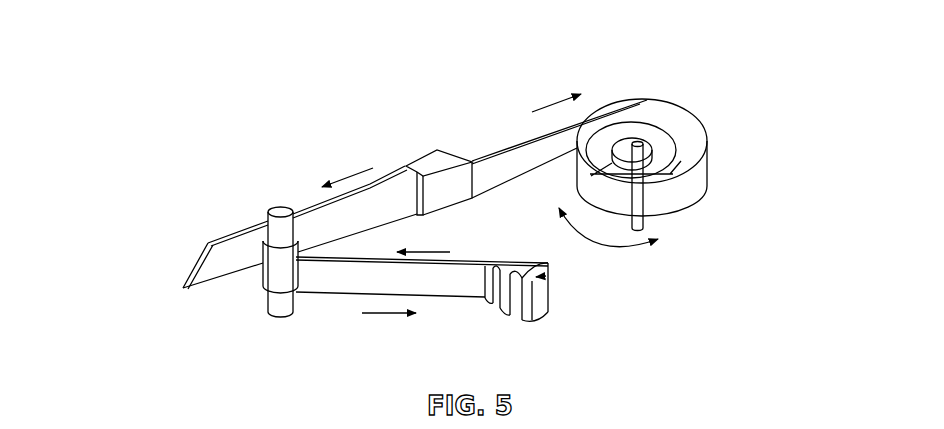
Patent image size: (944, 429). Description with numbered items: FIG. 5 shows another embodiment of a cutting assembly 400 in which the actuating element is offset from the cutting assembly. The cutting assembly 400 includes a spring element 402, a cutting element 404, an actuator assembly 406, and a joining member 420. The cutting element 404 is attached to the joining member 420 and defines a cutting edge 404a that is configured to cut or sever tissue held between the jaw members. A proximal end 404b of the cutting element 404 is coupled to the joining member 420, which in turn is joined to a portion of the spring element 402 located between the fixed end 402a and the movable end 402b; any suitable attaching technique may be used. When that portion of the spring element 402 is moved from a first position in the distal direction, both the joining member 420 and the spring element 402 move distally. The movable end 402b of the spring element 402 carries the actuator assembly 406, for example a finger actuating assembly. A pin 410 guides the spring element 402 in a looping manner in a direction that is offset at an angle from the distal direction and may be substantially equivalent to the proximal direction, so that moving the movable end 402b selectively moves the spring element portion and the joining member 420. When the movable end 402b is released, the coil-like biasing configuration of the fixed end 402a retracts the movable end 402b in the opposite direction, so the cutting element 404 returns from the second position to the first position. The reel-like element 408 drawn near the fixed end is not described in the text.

The cutting assembly 400 is at (228, 118).
The spring element 402 is at (421, 190).
The fixed end 402a is at (629, 140).
The movable end 402b is at (432, 290).
The cutting element 404 is at (206, 277).
The cutting edge 404a is at (192, 273).
The proximal end 404b is at (392, 177).
The actuator assembly 406 is at (552, 278).
The reel 408 is at (643, 137).
The pin 410 is at (279, 210).
The joining member 420 is at (443, 158).